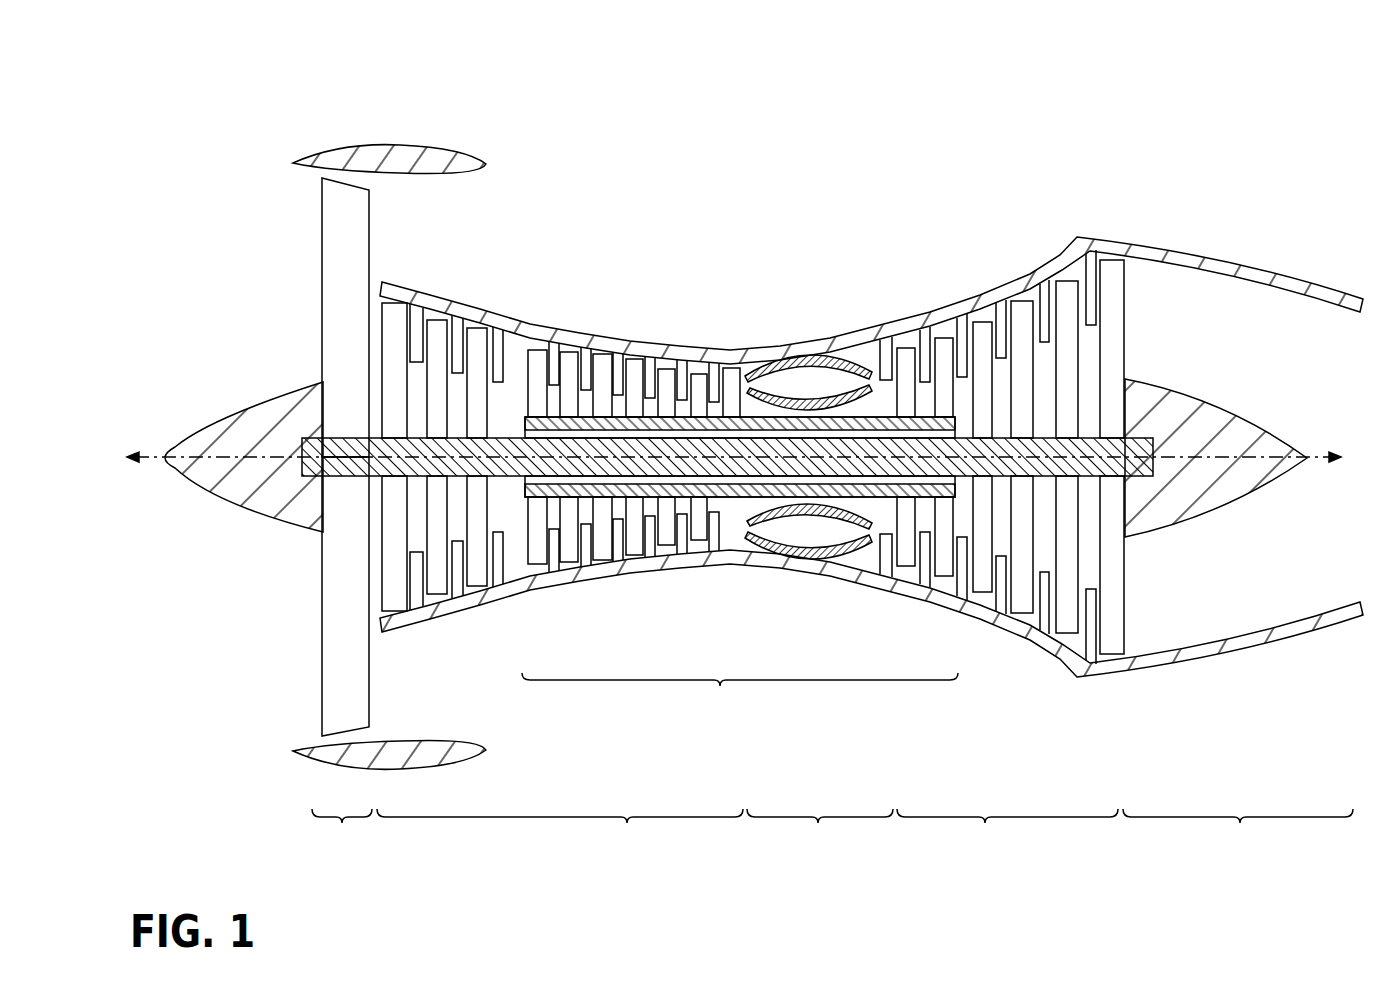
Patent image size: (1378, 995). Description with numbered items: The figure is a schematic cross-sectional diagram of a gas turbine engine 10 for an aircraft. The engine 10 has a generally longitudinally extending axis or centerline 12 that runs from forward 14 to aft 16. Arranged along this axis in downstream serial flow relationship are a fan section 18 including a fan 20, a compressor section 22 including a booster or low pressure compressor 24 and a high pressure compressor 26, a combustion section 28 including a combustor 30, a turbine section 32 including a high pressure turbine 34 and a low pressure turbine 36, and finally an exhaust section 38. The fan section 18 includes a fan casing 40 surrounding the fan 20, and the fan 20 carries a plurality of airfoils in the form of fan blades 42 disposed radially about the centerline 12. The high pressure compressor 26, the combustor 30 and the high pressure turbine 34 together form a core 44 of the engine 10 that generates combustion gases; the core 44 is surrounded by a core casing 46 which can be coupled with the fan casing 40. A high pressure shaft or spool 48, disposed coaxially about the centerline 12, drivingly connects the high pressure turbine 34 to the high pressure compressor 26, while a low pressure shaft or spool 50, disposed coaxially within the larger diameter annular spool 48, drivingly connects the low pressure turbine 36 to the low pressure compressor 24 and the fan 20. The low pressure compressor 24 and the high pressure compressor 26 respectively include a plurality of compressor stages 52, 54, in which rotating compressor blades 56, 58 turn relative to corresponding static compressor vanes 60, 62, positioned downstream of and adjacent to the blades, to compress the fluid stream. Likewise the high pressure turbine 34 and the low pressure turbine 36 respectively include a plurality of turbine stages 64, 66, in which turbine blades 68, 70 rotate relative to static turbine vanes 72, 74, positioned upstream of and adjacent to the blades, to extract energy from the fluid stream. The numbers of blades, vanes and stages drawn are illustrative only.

The gas turbine engine 10 is at (202, 80).
The centerline 12 is at (220, 458).
The forward 14 is at (119, 459).
The aft 16 is at (1351, 459).
The fan section 18 is at (342, 833).
The fan 20 is at (318, 243).
The compressor section 22 is at (560, 833).
The low pressure compressor 24 is at (513, 603).
The high pressure compressor 26 is at (677, 574).
The combustion section 28 is at (820, 833).
The combustor 30 is at (862, 354).
The turbine section 32 is at (1007, 833).
The high pressure turbine 34 is at (880, 592).
The low pressure turbine 36 is at (1013, 634).
The exhaust section 38 is at (1238, 833).
The fan casing 40 is at (392, 146).
The fan blades 42 is at (334, 677).
The core 44 is at (740, 695).
The core casing 46 is at (790, 338).
The HP shaft or spool 48 is at (740, 416).
The LP shaft or spool 50 is at (505, 440).
The compressor stages 52 is at (379, 271).
The compressor stages 54 is at (538, 322).
The compressor blades 56 is at (395, 310).
The compressor blades 58 is at (556, 356).
The compressor vanes 60 is at (417, 323).
The compressor vanes 62 is at (545, 352).
The turbine stages 64 is at (912, 308).
The turbine stages 66 is at (1042, 249).
The turbine blades 68 is at (943, 354).
The turbine blades 70 is at (1065, 303).
The turbine vanes 72 is at (928, 348).
The turbine vanes 74 is at (1047, 297).